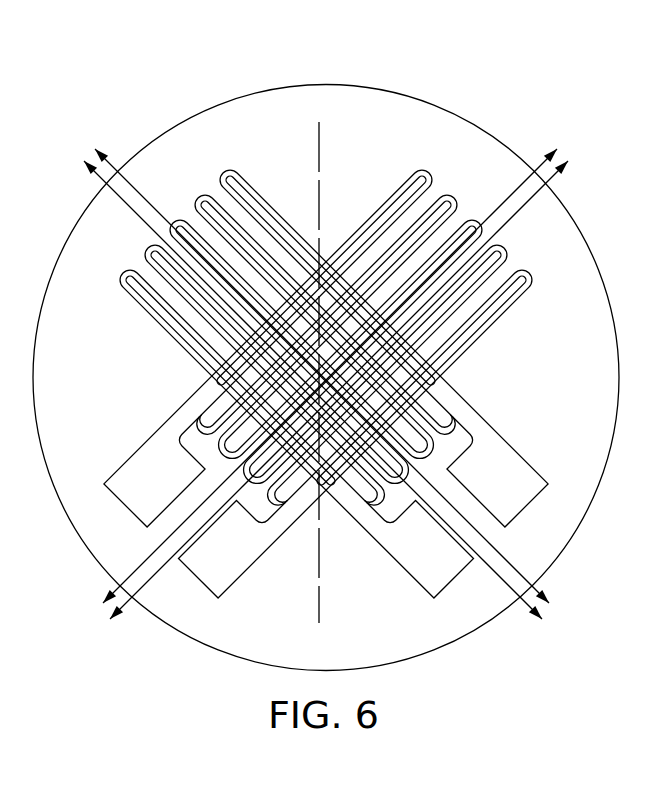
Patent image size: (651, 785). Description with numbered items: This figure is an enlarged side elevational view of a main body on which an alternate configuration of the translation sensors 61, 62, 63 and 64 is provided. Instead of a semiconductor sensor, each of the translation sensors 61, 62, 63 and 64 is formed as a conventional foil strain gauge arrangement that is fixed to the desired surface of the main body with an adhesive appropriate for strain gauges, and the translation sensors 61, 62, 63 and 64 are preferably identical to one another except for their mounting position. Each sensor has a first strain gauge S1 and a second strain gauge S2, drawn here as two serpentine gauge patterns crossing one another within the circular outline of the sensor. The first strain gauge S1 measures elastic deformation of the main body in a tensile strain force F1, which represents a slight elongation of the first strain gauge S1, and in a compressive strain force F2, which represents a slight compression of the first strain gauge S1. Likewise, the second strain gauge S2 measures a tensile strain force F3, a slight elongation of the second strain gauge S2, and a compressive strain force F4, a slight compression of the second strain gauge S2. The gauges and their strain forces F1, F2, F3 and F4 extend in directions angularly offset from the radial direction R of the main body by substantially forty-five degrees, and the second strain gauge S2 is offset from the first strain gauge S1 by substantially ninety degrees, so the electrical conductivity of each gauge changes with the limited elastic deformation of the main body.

The translation sensor 61 is at (326, 354).
The translation sensor 62 is at (326, 354).
The translation sensor 63 is at (326, 354).
The translation sensor 64 is at (436, 104).
The radial direction R is at (321, 143).
The first strain gauge S1 is at (247, 191).
The second strain gauge S2 is at (405, 191).
The tensile strain force F1 is at (513, 190).
The compressive strain force F2 is at (527, 203).
The tensile strain force F3 is at (490, 612).
The compressive strain force F4 is at (490, 612).